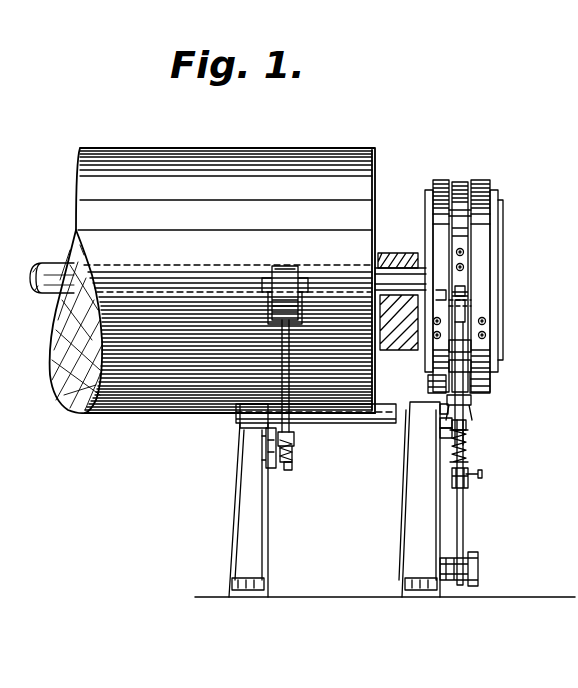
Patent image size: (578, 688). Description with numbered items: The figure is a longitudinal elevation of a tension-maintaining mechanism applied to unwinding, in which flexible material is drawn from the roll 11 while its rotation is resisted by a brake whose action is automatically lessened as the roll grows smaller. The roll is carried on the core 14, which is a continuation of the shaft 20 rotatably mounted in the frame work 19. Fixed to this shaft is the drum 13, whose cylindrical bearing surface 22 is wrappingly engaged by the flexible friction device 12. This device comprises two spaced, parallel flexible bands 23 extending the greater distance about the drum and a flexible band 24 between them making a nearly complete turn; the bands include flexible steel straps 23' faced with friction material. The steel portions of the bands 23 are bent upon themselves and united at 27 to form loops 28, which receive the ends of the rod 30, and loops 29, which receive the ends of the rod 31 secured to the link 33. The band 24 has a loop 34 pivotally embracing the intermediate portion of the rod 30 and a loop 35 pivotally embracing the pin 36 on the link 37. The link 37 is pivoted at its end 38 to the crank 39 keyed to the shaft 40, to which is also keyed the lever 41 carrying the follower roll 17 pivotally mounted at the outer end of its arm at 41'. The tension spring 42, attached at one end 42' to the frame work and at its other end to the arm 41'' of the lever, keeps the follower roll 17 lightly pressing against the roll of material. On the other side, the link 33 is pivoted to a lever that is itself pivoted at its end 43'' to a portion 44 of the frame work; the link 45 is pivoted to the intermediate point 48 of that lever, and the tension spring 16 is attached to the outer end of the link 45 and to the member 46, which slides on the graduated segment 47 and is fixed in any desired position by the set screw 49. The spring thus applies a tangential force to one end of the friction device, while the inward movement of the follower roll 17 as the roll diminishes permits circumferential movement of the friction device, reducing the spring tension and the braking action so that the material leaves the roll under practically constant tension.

The roll of material 11 is at (262, 154).
The flexible friction device 12 is at (482, 160).
The drum 13 is at (486, 203).
The core 14 is at (44, 266).
The tension spring 16 is at (468, 452).
The follower roll 17 is at (284, 265).
The frame work 19 is at (374, 300).
The shaft 20 is at (393, 252).
The cylindrical bearing surface 22 is at (498, 226).
The flexible bands 23 is at (469, 266).
The flexible steel straps 23' is at (464, 271).
The flexible band 24 is at (460, 213).
The united ends 27 is at (486, 321).
The loops 28 is at (486, 345).
The loops 29 is at (430, 384).
The rod 30 is at (482, 378).
The rod 31 is at (470, 400).
The link 33 is at (464, 404).
The loop 34 is at (484, 360).
The loop 35 is at (466, 290).
The pin 36 is at (472, 298).
The link 37 is at (430, 345).
The end of link 38 is at (482, 434).
The crank 39 is at (440, 428).
The shaft 40 is at (352, 424).
The lever 41 is at (230, 425).
The outer end of arm 41' is at (247, 336).
The arm of lever 41'' is at (310, 452).
The tension spring 42 is at (235, 457).
The end of spring 42' is at (297, 467).
The end of lever 43'' is at (489, 569).
The portion of frame work 44 is at (436, 590).
The link 45 is at (442, 437).
The member 46 is at (466, 486).
The graduated segment 47 is at (464, 542).
The intermediate point of lever 48 is at (438, 414).
The set screw 49 is at (483, 475).